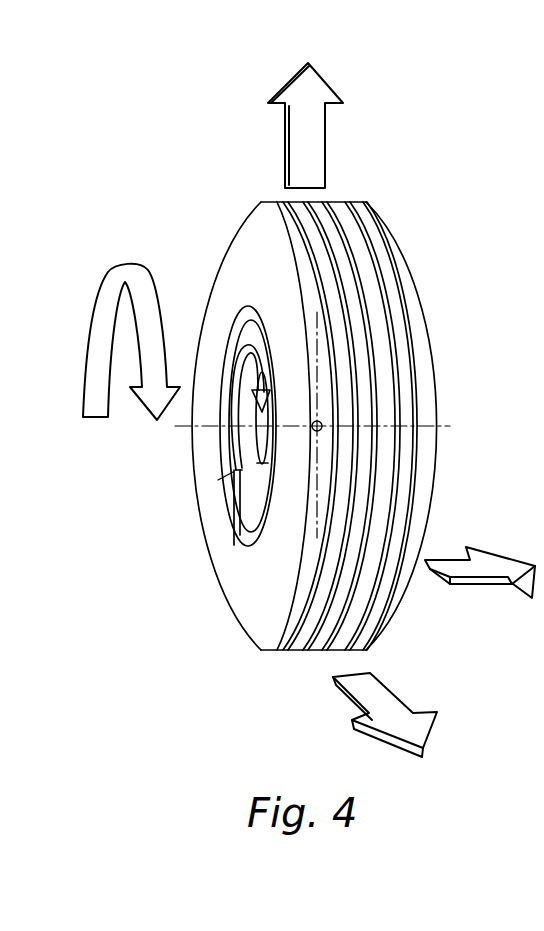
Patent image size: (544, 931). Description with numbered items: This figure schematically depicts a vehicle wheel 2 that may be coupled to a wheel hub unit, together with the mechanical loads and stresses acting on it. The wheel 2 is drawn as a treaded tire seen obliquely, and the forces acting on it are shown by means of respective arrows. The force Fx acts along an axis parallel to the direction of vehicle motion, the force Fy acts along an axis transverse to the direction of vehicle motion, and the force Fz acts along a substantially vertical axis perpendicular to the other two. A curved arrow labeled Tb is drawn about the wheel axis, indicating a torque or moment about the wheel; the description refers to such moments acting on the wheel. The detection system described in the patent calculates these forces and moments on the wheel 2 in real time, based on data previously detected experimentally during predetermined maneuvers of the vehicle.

The wheel 2 is at (441, 259).
The force Fz is at (313, 124).
The braking torque arrow Tb is at (113, 342).
The force Fy is at (480, 567).
The force Fx is at (398, 717).